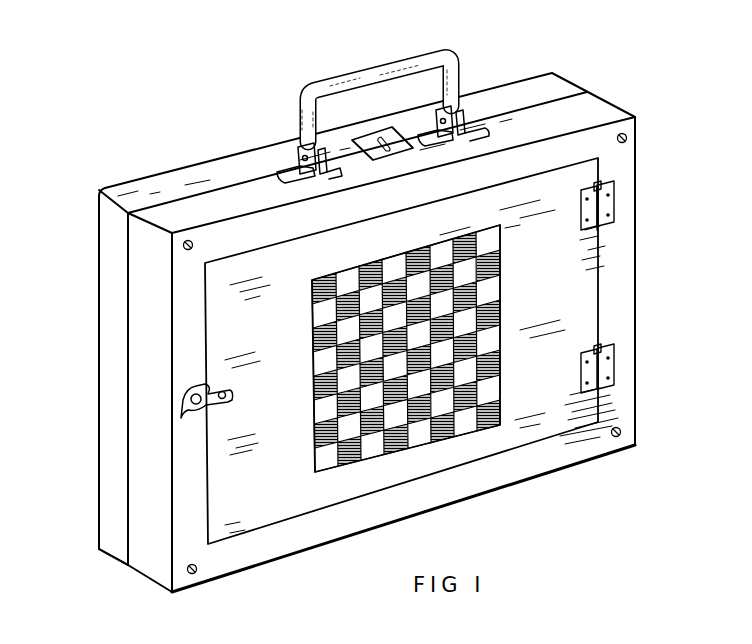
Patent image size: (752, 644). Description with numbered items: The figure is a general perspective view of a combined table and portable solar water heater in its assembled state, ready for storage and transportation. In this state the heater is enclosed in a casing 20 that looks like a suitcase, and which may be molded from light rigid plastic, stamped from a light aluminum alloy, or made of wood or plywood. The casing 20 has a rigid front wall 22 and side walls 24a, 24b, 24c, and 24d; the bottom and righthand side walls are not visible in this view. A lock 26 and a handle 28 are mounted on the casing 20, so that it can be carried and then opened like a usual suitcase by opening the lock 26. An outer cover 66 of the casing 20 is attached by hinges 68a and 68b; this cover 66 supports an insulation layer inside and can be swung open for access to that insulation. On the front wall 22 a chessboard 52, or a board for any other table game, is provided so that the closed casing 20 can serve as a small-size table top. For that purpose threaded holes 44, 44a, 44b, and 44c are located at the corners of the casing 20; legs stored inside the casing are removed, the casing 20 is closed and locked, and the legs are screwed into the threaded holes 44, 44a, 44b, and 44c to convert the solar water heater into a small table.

The casing 20 is at (147, 31).
The front wall 22 is at (553, 440).
The side wall 24a is at (519, 100).
The side wall 24b is at (598, 110).
The side wall 24c is at (148, 432).
The side wall 24d is at (113, 307).
The lock 26 is at (367, 143).
The handle 28 is at (430, 70).
The threaded hole 44 is at (183, 245).
The threaded hole 44a is at (627, 138).
The threaded hole 44b is at (189, 573).
The threaded hole 44c is at (620, 432).
The chessboard 52 is at (468, 422).
The outer cover 66 is at (575, 287).
The hinge 68a is at (612, 210).
The hinge 68b is at (612, 372).